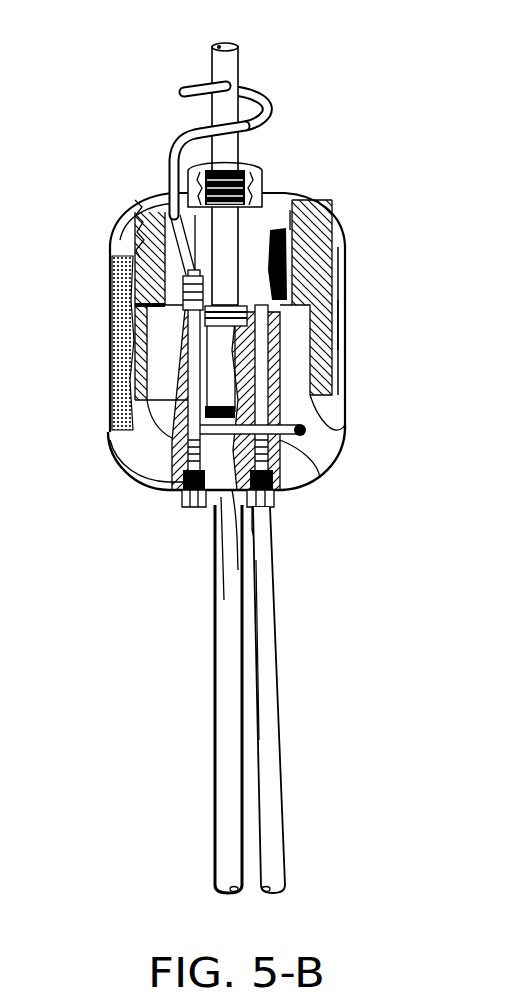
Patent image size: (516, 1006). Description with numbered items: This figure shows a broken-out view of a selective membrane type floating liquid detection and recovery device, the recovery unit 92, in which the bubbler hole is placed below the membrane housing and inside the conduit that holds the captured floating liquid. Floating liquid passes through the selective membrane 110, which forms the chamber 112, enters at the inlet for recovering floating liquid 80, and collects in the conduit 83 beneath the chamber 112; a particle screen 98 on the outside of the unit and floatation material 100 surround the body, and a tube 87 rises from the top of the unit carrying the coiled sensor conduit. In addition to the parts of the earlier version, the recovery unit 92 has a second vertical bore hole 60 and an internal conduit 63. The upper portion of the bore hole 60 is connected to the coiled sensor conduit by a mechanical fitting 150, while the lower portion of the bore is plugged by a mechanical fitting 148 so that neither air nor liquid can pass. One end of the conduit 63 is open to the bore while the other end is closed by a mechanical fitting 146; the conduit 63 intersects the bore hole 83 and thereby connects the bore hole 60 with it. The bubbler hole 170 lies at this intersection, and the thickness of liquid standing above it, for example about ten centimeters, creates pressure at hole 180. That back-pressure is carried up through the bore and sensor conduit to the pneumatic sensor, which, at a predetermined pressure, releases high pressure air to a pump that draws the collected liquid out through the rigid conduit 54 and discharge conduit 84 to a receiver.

The rigid conduit 54 is at (222, 822).
The bore hole 60 is at (165, 463).
The conduit 63 is at (214, 508).
The inlet for recovering floating liquid 80 is at (333, 322).
The conduit 83 is at (335, 412).
The discharge conduit 84 is at (282, 840).
The tube 87 is at (240, 57).
The selective membrane recovery unit adapted for well casing 92 is at (322, 189).
The particle screen 98 is at (110, 298).
The floatation material 100 is at (330, 363).
The selective membrane 110 is at (296, 246).
The chamber formed by selective screen 112 is at (266, 186).
The mechanical fitting 146 is at (306, 432).
The mechanical fitting 148 is at (180, 502).
The mechanical fitting 150 is at (278, 522).
The bubbler hole 170 is at (238, 560).
The bubbler hole 180 is at (255, 665).